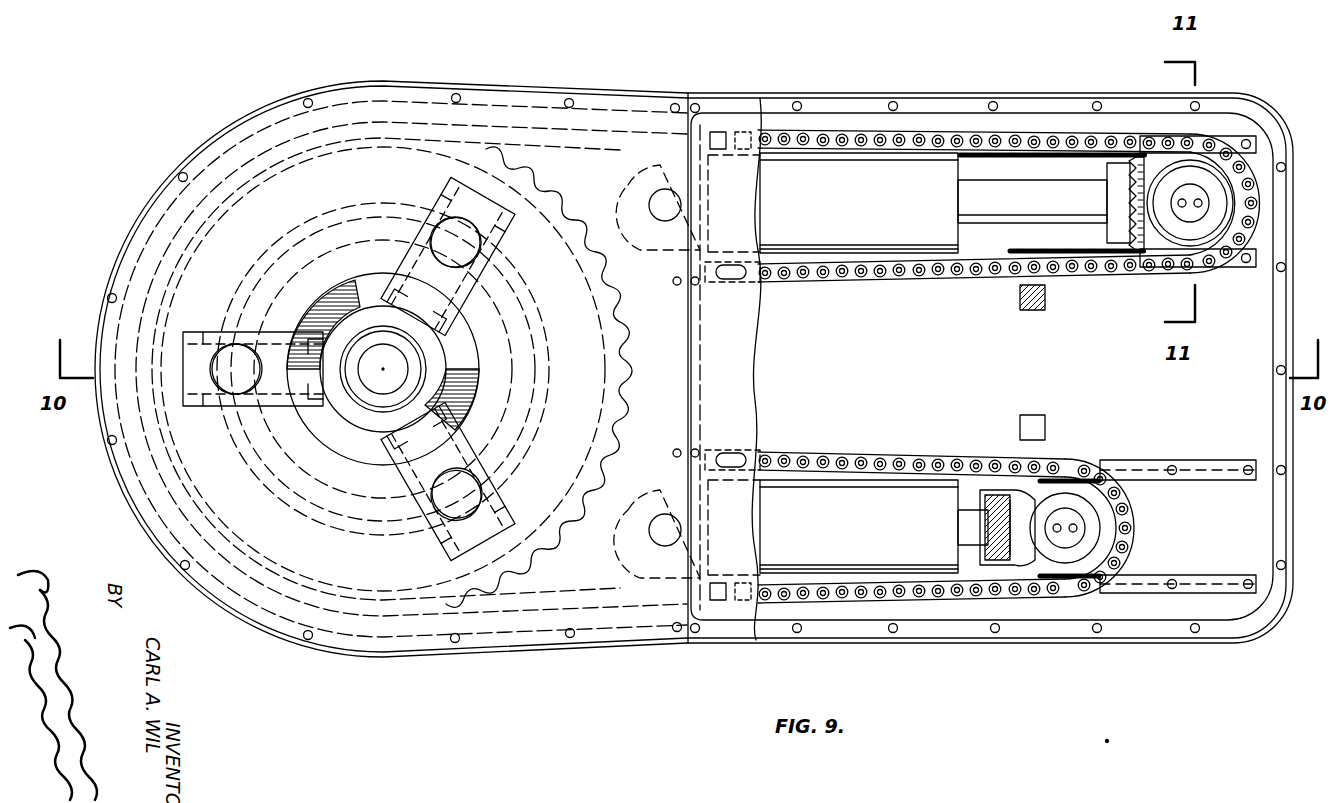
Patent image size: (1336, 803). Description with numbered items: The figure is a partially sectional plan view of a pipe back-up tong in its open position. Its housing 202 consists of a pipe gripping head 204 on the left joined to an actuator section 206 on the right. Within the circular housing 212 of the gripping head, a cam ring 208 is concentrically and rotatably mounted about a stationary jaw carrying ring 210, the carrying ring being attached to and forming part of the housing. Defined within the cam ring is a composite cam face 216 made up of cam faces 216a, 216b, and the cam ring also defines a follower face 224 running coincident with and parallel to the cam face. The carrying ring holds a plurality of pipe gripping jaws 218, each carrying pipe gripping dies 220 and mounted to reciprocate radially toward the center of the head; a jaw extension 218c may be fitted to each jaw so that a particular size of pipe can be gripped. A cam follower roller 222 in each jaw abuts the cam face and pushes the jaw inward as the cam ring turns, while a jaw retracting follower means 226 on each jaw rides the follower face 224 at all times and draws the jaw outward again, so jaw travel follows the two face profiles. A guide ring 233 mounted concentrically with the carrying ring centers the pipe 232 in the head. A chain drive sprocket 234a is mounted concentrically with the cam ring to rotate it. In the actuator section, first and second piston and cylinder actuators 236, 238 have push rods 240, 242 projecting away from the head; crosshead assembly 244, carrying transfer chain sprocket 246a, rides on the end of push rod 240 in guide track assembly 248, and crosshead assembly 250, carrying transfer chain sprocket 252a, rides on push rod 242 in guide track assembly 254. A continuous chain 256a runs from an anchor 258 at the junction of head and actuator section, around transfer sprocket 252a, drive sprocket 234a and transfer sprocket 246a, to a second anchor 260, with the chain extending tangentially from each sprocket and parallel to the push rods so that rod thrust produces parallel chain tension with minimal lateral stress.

The housing 202 is at (722, 86).
The pipe gripping head 204 is at (395, 80).
The actuator section 206 is at (1015, 92).
The cam ring 208 is at (302, 486).
The stationary jaw carrying ring 210 is at (175, 432).
The circular housing 212 is at (142, 210).
The composite cam face 216 is at (530, 382).
The cam face 216a is at (252, 290).
The cam face 216b is at (383, 208).
The pipe gripping jaw 218 is at (500, 276).
The guide bar end 218c is at (458, 330).
The pipe gripping die 220 is at (432, 335).
The cam follower roller 222 is at (493, 246).
The follower face 224 is at (275, 253).
The jaw retracting follower means 226 is at (205, 330).
The pipe 232 is at (383, 410).
The guide ring 233 is at (348, 292).
The chain drive sprocket 234a is at (548, 560).
The first piston and cylinder linear fluid pressure operated actuator 236 is at (820, 160).
The second piston and cylinder linear fluid pressure operated actuator 238 is at (822, 488).
The push rod 240 is at (1017, 186).
The push rod 242 is at (963, 505).
The crosshead assembly 244 is at (1143, 168).
The transfer chain sprocket 246a is at (1137, 230).
The guide track assembly 248 is at (1232, 175).
The crosshead assembly 250 is at (1005, 462).
The transfer chain sprocket 252a is at (1078, 488).
The guide track assembly 254 is at (1198, 462).
The continuous length of chain 256a is at (822, 282).
The anchor 258 is at (712, 448).
The anchor 260 is at (712, 284).